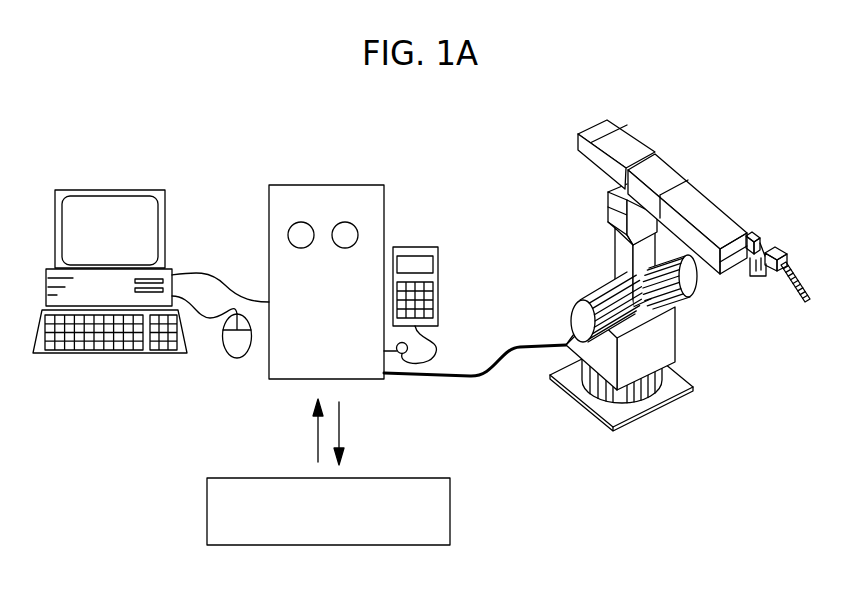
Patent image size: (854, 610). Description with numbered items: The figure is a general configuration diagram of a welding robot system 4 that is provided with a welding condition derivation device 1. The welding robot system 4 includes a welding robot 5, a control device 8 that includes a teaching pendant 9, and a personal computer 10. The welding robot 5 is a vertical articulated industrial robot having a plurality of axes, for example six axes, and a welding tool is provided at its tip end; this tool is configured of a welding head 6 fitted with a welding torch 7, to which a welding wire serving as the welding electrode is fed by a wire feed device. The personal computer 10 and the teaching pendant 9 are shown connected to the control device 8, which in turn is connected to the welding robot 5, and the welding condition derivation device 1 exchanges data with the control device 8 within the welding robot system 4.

The welding condition derivation device 1 is at (412, 478).
The welding robot system 4 is at (680, 242).
The welding robot 5 is at (695, 205).
The welding head 6 is at (774, 294).
The welding torch 7 is at (783, 283).
The control device 8 is at (357, 185).
The teaching pendant 9 is at (425, 247).
The personal computer 10 is at (136, 190).